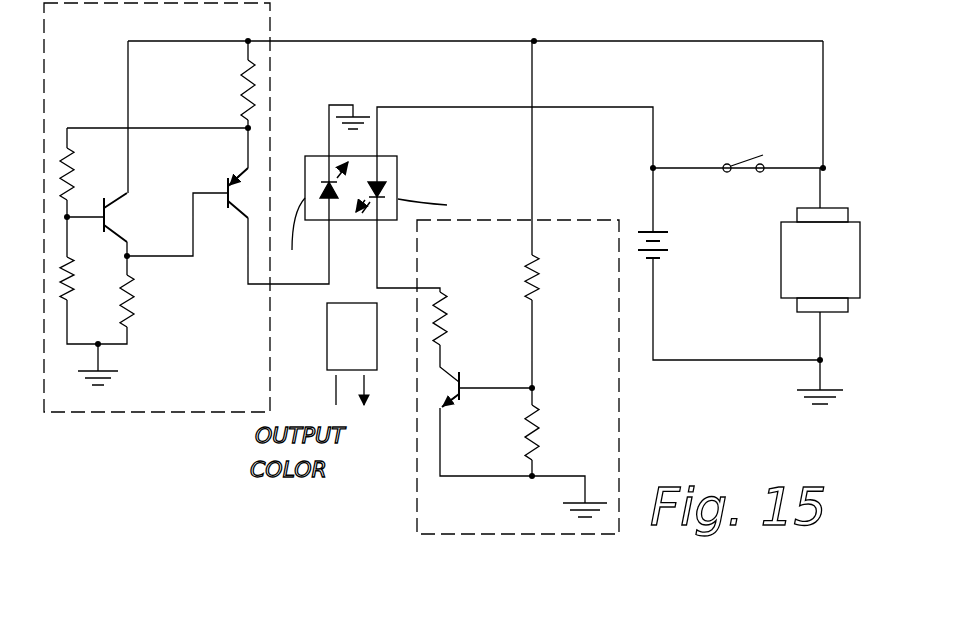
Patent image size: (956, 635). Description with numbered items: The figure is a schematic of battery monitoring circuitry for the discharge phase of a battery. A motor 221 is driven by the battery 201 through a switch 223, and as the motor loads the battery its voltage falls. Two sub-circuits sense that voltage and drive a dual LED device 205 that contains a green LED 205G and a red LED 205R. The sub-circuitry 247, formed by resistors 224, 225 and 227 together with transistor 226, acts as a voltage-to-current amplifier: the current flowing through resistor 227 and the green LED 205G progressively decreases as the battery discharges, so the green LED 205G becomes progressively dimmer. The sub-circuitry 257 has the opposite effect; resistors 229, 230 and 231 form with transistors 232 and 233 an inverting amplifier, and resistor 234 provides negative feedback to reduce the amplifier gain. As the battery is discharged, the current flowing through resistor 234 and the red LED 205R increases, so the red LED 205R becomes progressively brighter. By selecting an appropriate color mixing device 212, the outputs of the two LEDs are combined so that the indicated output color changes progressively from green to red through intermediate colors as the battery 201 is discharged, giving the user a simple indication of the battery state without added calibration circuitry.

The battery 201 is at (668, 246).
The dual LED device 205 is at (407, 171).
The red LED 205R is at (305, 160).
The green LED 205G is at (392, 158).
The color mixing device 212 is at (327, 346).
The motor 221 is at (792, 273).
The switch 223 is at (740, 160).
The resistor 224 is at (538, 282).
The resistor 225 is at (539, 428).
The transistor 226 is at (448, 402).
The resistor 227 is at (445, 318).
The resistor 229 is at (72, 178).
The resistor 230 is at (68, 275).
The resistor 231 is at (131, 311).
The transistor 232 is at (110, 210).
The transistor 233 is at (218, 205).
The resistor 234 is at (244, 85).
The sub-circuitry 247 is at (618, 428).
The sub-circuitry 257 is at (178, 412).